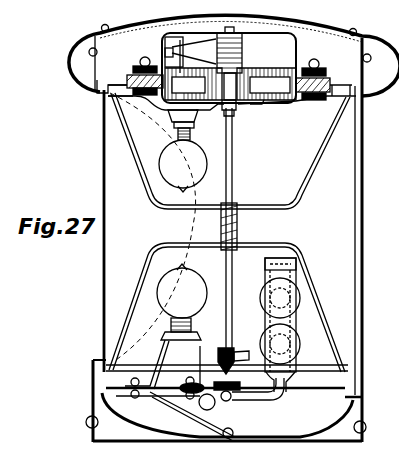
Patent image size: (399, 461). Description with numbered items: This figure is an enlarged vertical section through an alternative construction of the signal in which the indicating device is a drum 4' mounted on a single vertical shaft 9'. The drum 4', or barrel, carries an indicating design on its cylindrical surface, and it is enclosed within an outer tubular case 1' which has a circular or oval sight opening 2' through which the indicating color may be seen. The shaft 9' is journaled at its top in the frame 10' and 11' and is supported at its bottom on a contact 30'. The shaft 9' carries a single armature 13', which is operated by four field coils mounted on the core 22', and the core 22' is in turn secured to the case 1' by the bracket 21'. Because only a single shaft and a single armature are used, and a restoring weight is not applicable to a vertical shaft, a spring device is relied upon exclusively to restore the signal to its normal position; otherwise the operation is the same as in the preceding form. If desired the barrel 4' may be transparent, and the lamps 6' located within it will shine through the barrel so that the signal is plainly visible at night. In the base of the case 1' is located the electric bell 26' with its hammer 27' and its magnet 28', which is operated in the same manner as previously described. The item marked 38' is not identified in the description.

The case 1' is at (234, 228).
The sight opening 2' is at (104, 220).
The drum 4' is at (229, 232).
The lamps 6' is at (182, 225).
The shaft 9' is at (237, 224).
The frame 10' is at (232, 71).
The frame 11' is at (211, 116).
The armature 13' is at (263, 114).
The bracket 21' is at (232, 75).
The core 22' is at (250, 63).
The electric bell 26' is at (227, 415).
The hammer 27' is at (227, 390).
The magnet 28' is at (290, 325).
The contact 30' is at (249, 374).
The lever 38' is at (194, 51).